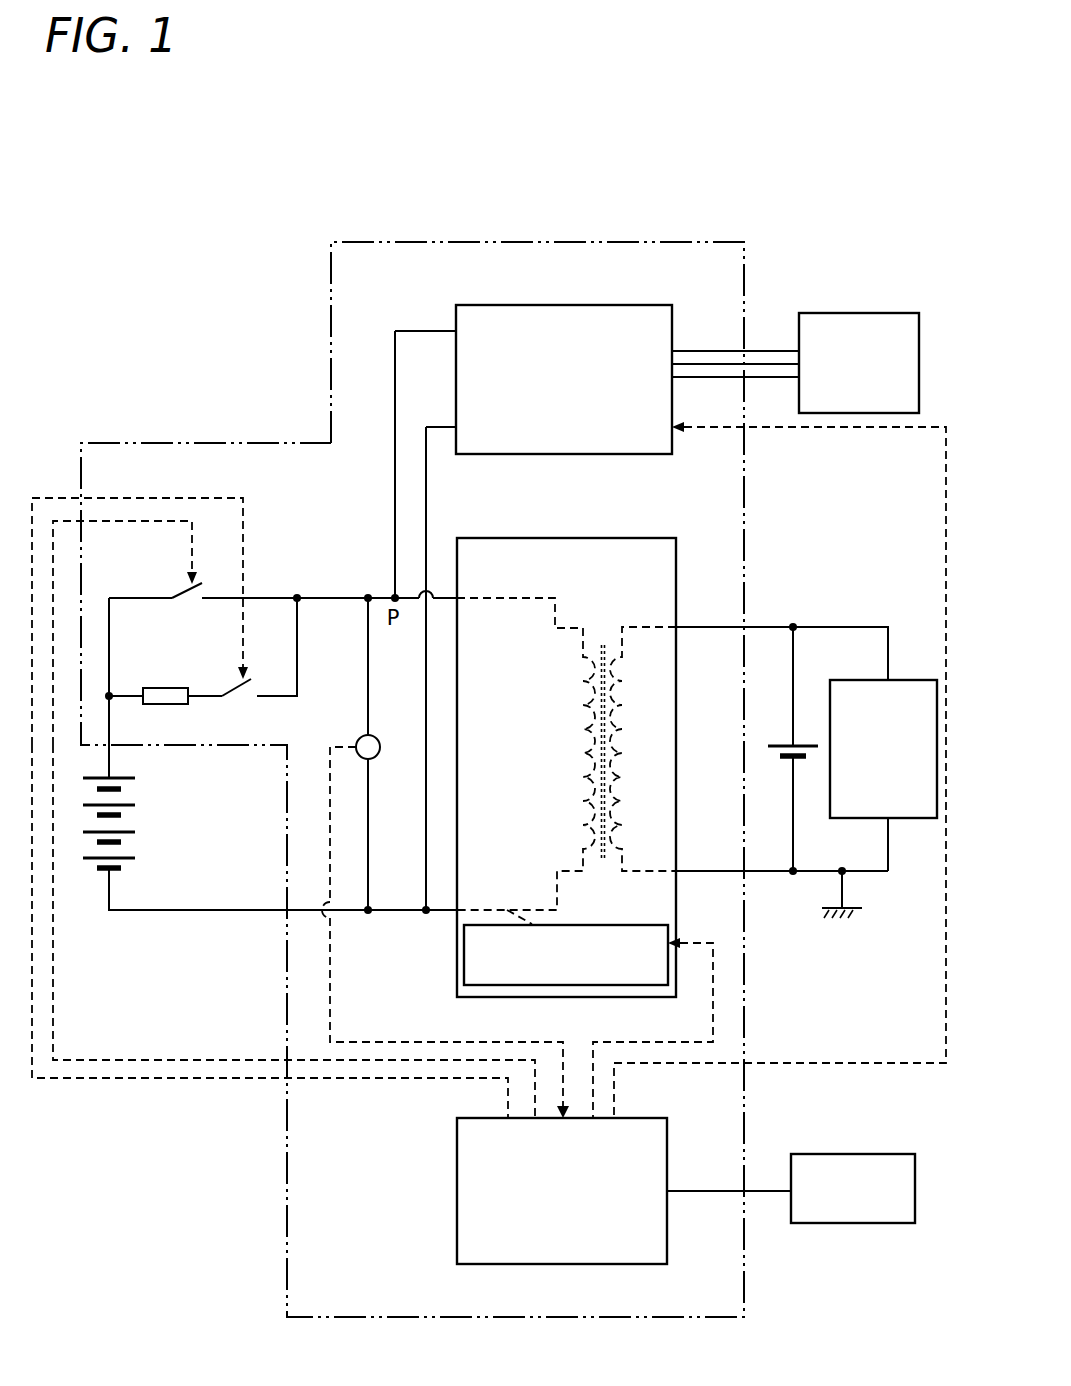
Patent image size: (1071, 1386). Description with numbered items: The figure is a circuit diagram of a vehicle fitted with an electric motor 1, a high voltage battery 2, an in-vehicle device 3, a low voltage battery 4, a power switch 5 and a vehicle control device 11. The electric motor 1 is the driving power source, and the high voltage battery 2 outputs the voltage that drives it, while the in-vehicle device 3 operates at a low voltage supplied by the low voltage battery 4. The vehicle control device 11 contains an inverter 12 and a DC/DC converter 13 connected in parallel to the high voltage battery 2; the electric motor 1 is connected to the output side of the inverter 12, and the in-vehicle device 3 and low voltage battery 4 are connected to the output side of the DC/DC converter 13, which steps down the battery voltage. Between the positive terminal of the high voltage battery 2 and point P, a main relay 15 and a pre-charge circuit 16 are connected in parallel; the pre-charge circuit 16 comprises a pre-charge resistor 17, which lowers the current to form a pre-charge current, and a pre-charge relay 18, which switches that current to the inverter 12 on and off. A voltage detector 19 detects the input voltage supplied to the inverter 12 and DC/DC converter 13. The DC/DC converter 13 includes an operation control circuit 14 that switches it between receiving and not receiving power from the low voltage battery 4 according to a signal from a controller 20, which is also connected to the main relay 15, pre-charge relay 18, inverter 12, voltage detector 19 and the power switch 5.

The electric motor 1 is at (862, 313).
The high voltage battery 2 is at (135, 805).
The in-vehicle device 3 is at (906, 680).
The low voltage battery 4 is at (812, 745).
The power switch 5 is at (852, 1154).
The vehicle control device 11 is at (452, 242).
The inverter 12 is at (557, 305).
The DC/DC converter 13 is at (565, 538).
The operation control circuit 14 is at (668, 925).
The main relay 15 is at (188, 589).
The pre-charge circuit 16 is at (141, 621).
The pre-charge resistor 17 is at (157, 688).
The pre-charge relay 18 is at (190, 679).
The voltage detector 19 is at (358, 738).
The controller 20 is at (647, 1118).